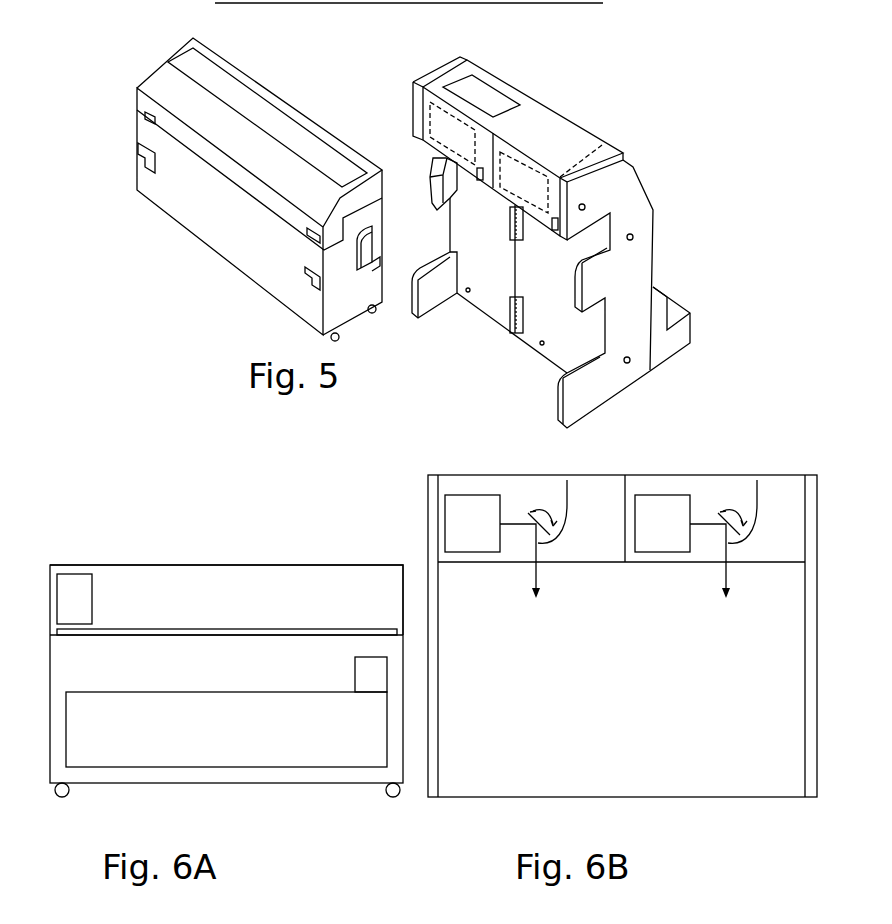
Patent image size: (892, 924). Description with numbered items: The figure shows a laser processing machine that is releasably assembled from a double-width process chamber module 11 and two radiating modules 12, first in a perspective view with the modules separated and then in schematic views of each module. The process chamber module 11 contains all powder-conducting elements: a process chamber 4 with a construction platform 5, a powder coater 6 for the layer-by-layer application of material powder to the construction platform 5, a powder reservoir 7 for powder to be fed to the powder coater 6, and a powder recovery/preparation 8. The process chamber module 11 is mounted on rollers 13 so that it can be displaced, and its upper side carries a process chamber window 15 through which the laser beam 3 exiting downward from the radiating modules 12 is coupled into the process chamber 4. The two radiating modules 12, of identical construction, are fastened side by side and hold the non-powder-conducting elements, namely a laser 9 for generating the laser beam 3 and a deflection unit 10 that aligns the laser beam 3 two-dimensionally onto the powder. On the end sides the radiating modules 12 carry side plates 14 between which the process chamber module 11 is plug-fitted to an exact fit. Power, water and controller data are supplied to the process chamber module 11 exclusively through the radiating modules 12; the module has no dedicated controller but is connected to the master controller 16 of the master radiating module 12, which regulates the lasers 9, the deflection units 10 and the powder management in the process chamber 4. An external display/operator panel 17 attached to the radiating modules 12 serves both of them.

In FIG. 5, the process chamber module 11 is at (126, 88).
In FIG. 6A, the process chamber module 11 is at (163, 541).
In FIG. 5, the process chamber window 15 is at (185, 67).
In FIG. 5, the radiating module 12 is at (524, 81).
In FIG. 6B, the radiating module 12 is at (504, 445).
In FIG. 5, the external display/operator panel 17 is at (483, 97).
In FIG. 5, the controller 16 is at (425, 118).
In FIG. 5, the side plate 14 is at (450, 65).
In FIG. 6B, the side plate 14 is at (433, 498).
In FIG. 6A, the process chamber 4 is at (348, 583).
In FIG. 6A, the construction platform 5 is at (280, 630).
In FIG. 6A, the powder coater 6 is at (72, 587).
In FIG. 6A, the powder reservoir 7 is at (117, 755).
In FIG. 6A, the powder recovery/preparation 8 is at (368, 678).
In FIG. 6A, the rollers 13 is at (396, 798).
In FIG. 6B, the laser 9 is at (465, 510).
In FIG. 6B, the deflection unit 10 is at (532, 513).
In FIG. 6B, the laser beam 3 is at (567, 480).